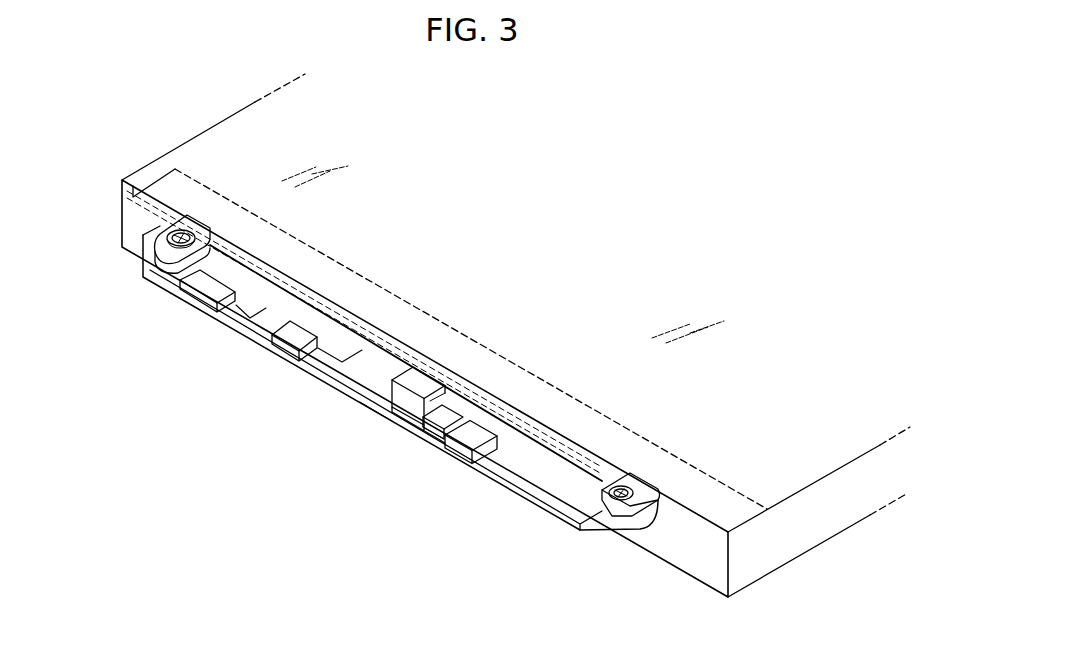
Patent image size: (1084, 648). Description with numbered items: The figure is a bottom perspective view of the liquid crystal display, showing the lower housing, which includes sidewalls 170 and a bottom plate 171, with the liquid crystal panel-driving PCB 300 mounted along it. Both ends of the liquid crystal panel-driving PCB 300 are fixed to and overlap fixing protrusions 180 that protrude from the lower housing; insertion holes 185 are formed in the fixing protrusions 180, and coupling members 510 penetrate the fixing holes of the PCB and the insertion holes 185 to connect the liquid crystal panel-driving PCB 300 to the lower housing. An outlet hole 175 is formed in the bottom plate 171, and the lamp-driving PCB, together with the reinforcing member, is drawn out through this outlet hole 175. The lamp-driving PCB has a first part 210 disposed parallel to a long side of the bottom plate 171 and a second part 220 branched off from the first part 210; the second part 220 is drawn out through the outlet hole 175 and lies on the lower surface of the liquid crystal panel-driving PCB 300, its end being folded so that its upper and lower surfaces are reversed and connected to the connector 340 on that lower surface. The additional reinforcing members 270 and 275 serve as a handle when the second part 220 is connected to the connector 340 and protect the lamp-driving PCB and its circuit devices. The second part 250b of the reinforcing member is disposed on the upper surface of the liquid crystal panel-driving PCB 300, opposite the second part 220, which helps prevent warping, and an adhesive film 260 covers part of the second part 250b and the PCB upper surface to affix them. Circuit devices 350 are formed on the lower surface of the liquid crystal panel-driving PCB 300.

The sidewalls 170 is at (697, 556).
The bottom plate 171 is at (768, 476).
The outlet hole 175 is at (440, 402).
The fixing protrusions 180 is at (185, 228).
The insertion holes 185 is at (143, 247).
The first part 210 is at (683, 466).
The second part 220 is at (392, 395).
The second part of reinforcing member 250b is at (376, 427).
The adhesive film 260 is at (395, 428).
The additional reinforcing member 270 is at (445, 422).
The additional reinforcing member 275 is at (432, 442).
The liquid crystal panel-driving PCB 300 is at (565, 500).
The connector 340 is at (468, 449).
The circuit devices 350 is at (183, 295).
The coupling members 510 is at (163, 235).